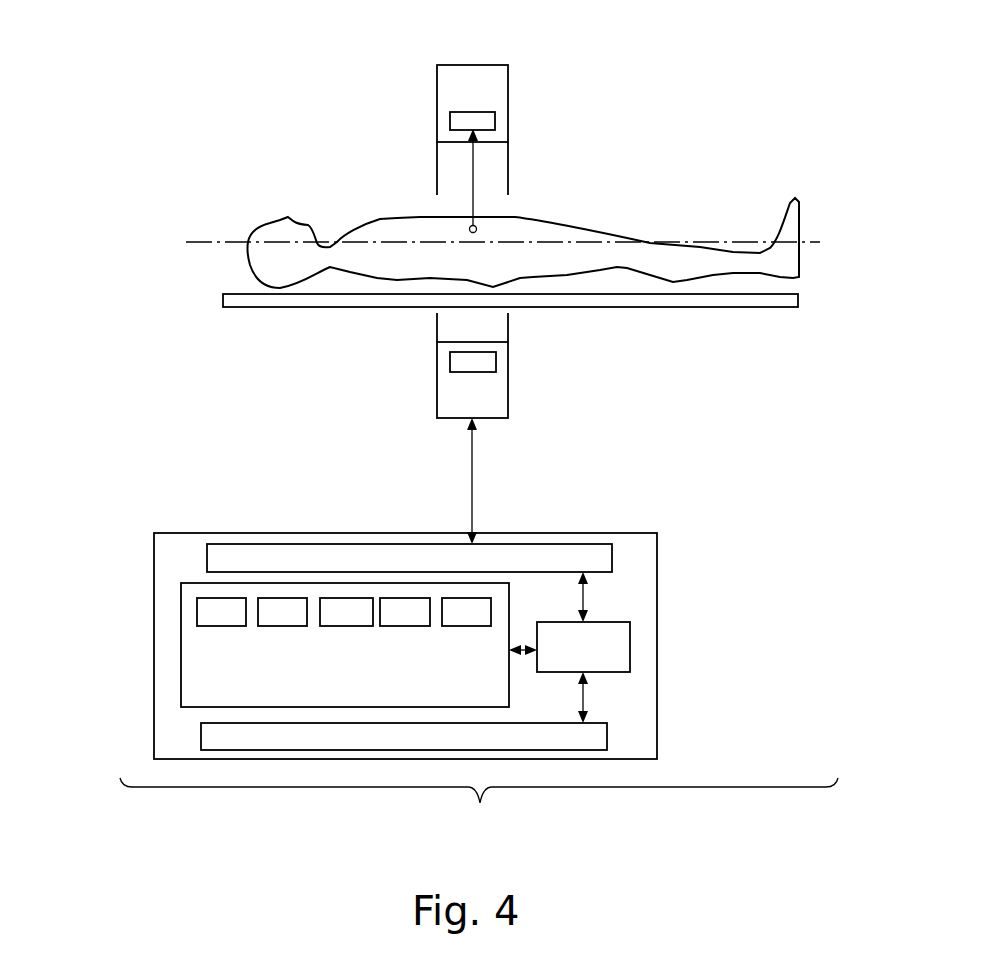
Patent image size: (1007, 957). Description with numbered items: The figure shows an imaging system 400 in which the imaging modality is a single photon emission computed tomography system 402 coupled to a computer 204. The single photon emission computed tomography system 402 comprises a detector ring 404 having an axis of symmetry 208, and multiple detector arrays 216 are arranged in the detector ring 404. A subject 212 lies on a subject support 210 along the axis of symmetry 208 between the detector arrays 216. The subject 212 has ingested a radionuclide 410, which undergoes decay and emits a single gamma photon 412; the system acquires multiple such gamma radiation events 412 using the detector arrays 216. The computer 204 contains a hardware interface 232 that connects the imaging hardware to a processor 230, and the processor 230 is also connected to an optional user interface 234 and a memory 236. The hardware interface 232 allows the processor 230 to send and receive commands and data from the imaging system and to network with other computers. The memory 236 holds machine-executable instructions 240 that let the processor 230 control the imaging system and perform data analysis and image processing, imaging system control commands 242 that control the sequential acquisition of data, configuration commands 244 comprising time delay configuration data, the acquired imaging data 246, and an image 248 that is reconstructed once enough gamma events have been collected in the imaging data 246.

The single photon emission computed tomography system 402 is at (560, 69).
The detector ring 404 is at (437, 80).
The detector array 216 is at (496, 122).
The gamma photon 412 is at (482, 168).
The radionuclide 410 is at (478, 226).
The subject 212 is at (585, 226).
The axis of symmetry 208 is at (725, 241).
The subject support 210 is at (698, 308).
The computer 204 is at (657, 572).
The hardware interface 232 is at (409, 558).
The user interface 234 is at (404, 737).
The processor 230 is at (569, 647).
The memory 236 is at (181, 643).
The machine-executable instructions 240 is at (221, 612).
The imaging system control commands 242 is at (281, 548).
The configuration commands 244 is at (346, 612).
The imaging data 246 is at (405, 612).
The image 248 is at (466, 612).
The imaging system 400 is at (479, 807).